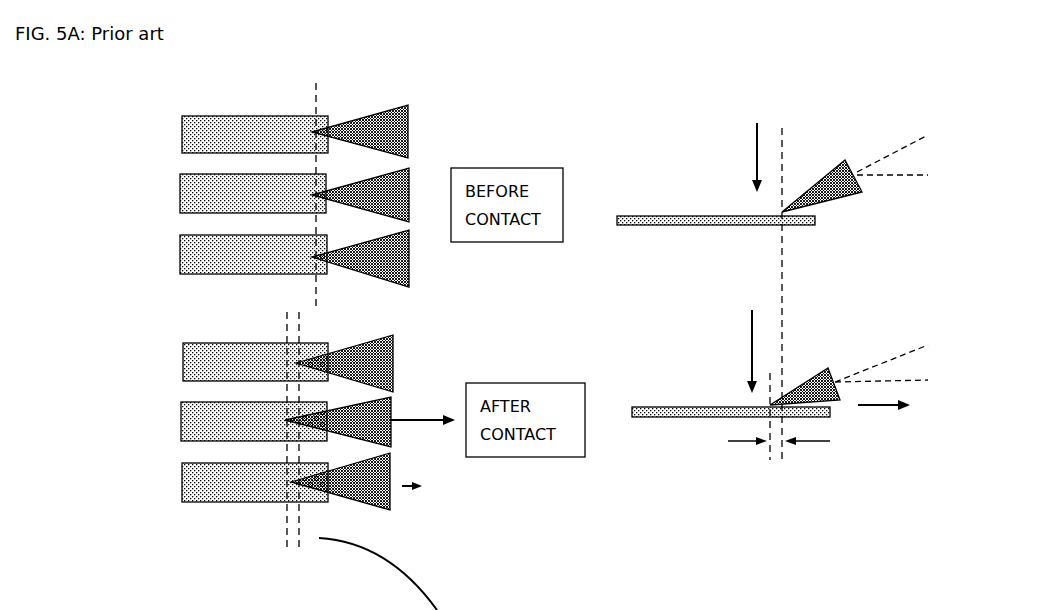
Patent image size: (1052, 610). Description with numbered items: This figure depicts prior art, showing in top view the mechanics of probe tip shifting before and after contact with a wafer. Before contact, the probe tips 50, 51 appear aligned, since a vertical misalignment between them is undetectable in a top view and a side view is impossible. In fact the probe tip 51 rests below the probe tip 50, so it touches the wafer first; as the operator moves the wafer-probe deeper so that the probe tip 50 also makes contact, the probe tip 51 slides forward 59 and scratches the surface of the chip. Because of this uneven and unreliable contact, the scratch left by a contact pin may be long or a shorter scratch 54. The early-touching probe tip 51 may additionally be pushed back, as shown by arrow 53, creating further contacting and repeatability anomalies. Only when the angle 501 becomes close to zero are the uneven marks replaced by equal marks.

The probe tip 50 is at (392, 108).
The probe tip 51 is at (409, 177).
The arrow 53 is at (421, 430).
The shorter scratch 54 is at (403, 495).
The forward slide 59 is at (776, 468).
The angle 501 is at (900, 365).